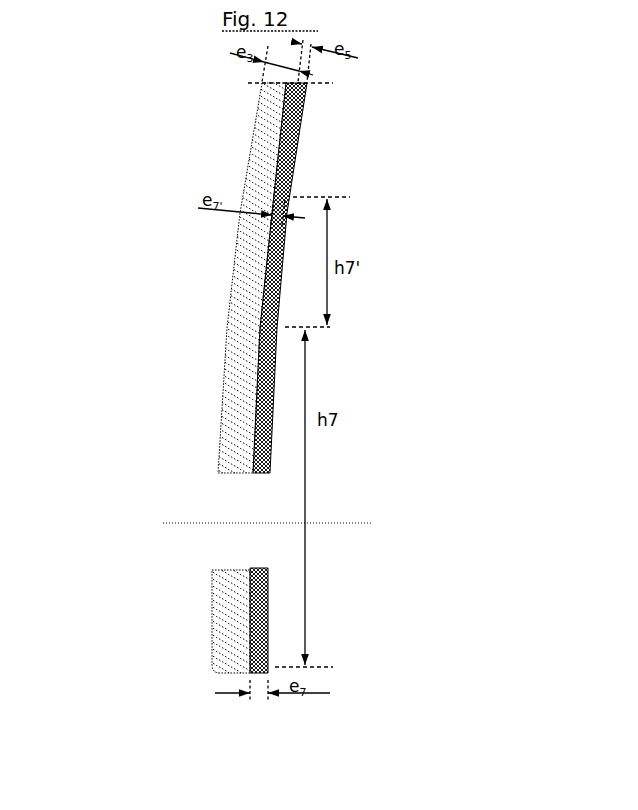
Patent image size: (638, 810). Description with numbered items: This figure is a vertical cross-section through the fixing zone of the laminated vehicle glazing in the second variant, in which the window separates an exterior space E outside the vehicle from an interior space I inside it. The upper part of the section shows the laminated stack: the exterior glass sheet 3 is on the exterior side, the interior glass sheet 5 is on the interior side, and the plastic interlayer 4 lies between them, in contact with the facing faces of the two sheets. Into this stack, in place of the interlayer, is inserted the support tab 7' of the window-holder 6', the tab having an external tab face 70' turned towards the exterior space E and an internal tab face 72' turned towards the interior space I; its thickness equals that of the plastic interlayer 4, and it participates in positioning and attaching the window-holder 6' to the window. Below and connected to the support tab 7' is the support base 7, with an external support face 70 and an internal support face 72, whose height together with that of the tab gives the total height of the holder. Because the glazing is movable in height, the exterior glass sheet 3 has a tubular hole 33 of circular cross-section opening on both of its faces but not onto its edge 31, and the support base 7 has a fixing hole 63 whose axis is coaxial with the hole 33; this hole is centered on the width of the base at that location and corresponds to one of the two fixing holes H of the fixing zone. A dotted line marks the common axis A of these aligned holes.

The exterior glass sheet 3 is at (275, 102).
The plastic interlayer 4 is at (294, 102).
The interior glass sheet 5 is at (297, 119).
The window-holder 6' is at (445, 178).
The support base 7 is at (248, 278).
The support tab 7' is at (235, 227).
The external support face 70 is at (212, 404).
The external tab face 70' is at (222, 260).
The internal support face 72 is at (218, 446).
The internal tab face 72' is at (227, 296).
The edge of exterior glass sheet 31 is at (228, 674).
The tubular hole 33 is at (202, 550).
The fixing hole 63 is at (291, 495).
The fixing hole H is at (147, 482).
The exterior space E is at (58, 336).
The interior space I is at (378, 331).
The axis A is at (372, 524).